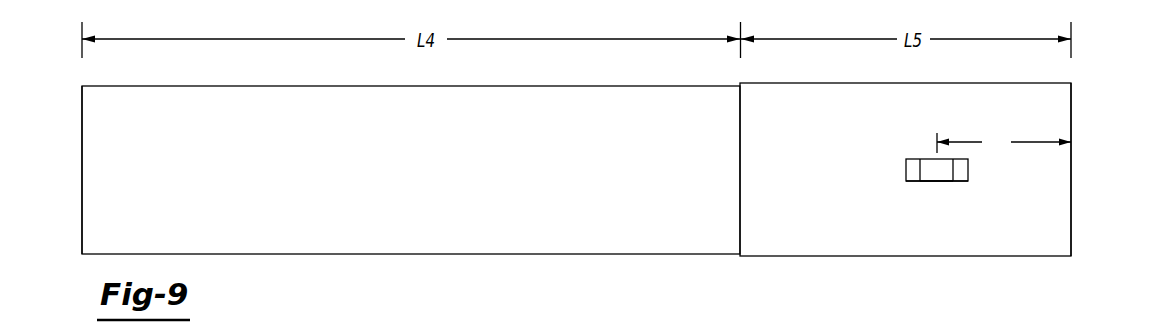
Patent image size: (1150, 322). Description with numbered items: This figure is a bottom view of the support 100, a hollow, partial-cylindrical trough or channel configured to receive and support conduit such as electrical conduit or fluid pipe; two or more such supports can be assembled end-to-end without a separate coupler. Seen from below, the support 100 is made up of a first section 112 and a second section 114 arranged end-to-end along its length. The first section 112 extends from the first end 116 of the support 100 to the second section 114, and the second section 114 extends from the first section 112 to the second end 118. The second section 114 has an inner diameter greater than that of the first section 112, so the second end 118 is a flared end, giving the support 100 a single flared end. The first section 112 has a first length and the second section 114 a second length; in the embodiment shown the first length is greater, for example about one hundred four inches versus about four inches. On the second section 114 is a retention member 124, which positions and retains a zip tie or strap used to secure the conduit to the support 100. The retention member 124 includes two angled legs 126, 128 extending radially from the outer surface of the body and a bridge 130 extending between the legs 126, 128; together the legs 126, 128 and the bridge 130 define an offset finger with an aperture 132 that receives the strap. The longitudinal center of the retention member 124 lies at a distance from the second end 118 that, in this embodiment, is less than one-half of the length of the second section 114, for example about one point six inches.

The support 100 is at (578, 183).
The first section 112 is at (247, 112).
The second section 114 is at (933, 100).
The first end 116 is at (82, 169).
The second end 118 is at (1071, 176).
The retention member 124 is at (935, 175).
The angled leg 126 is at (913, 171).
The angled leg 128 is at (958, 168).
The bridge 130 is at (926, 164).
The aperture 132 is at (929, 184).